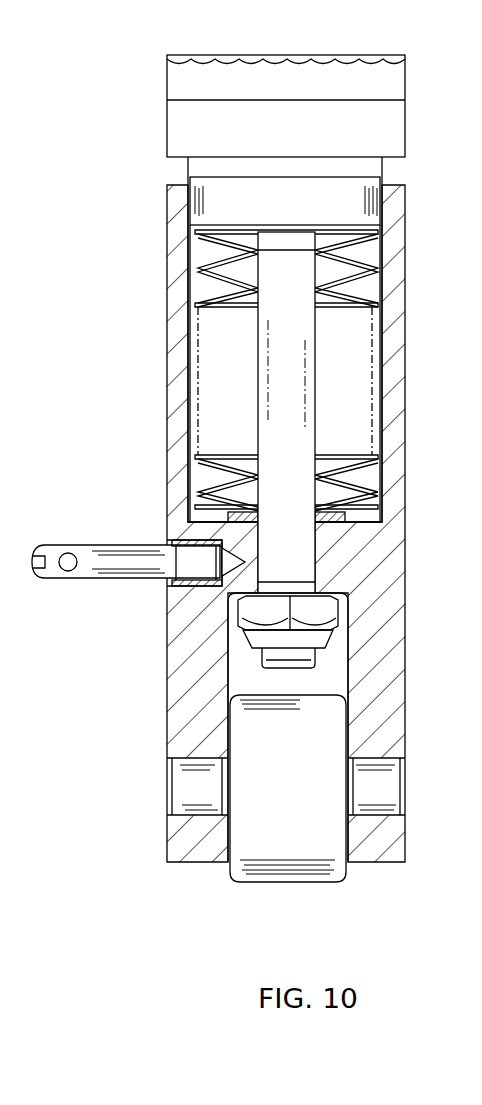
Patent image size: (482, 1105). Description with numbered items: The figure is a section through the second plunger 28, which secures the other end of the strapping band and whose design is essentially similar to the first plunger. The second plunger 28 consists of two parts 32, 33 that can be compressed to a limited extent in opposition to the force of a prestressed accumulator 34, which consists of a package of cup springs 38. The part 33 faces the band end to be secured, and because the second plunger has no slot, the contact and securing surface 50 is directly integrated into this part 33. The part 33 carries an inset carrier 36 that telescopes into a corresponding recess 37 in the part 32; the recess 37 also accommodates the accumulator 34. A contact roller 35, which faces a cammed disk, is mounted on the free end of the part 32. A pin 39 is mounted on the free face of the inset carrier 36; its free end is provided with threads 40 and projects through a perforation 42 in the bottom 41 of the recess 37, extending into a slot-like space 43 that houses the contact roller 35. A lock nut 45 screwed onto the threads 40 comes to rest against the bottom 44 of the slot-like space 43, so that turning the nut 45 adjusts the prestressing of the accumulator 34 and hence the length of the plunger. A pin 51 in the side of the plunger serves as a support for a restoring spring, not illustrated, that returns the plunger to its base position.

The second plunger 28 is at (408, 328).
The part of plunger 32 is at (382, 556).
The part of plunger 33 is at (386, 128).
The prestressed accumulator 34 is at (370, 248).
The contact roller 35 is at (292, 872).
The inset carrier 36 is at (372, 208).
The recess 37 is at (360, 470).
The cup springs 38 is at (332, 290).
The pin 39 is at (300, 380).
The threads 40 is at (290, 588).
The bottom of recess 41 is at (385, 505).
The perforation 42 is at (322, 548).
The slot-like space 43 is at (326, 684).
The bottom of slot-like space 44 is at (232, 598).
The lock nut 45 is at (320, 618).
The contact and securing surface 50 is at (296, 38).
The pin 51 is at (118, 566).